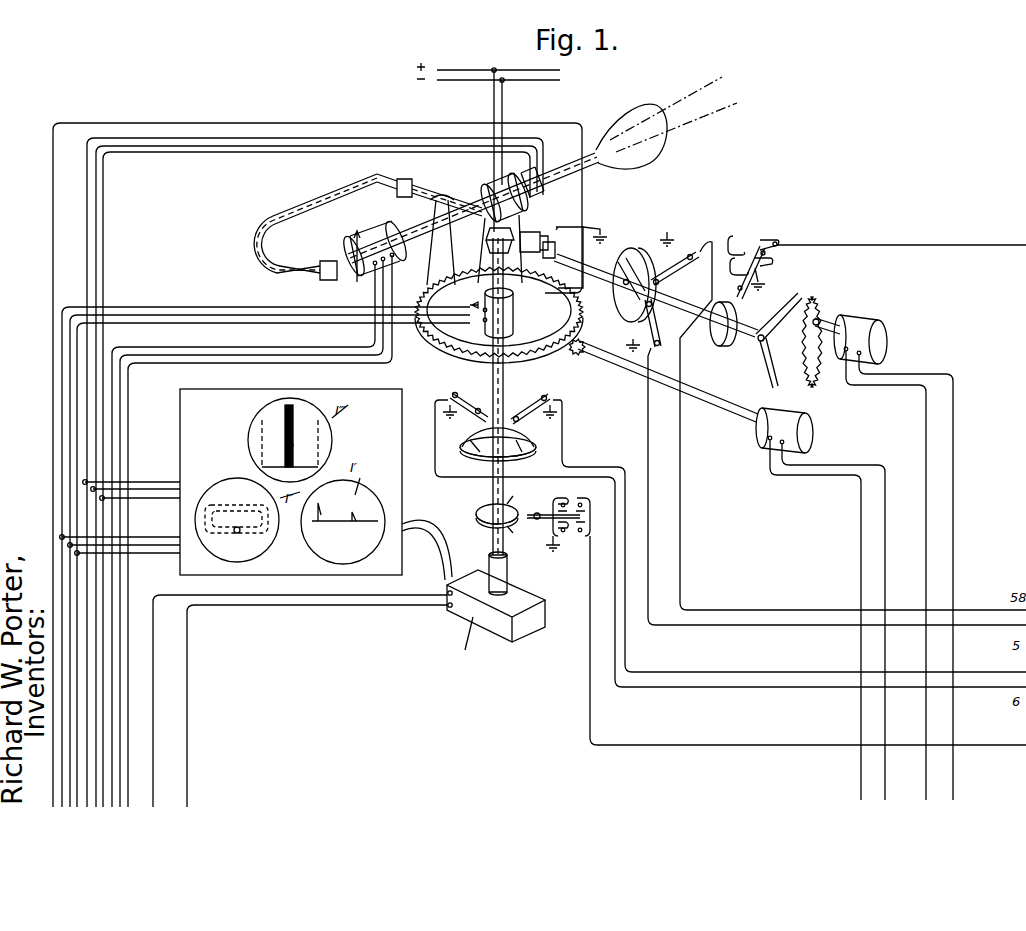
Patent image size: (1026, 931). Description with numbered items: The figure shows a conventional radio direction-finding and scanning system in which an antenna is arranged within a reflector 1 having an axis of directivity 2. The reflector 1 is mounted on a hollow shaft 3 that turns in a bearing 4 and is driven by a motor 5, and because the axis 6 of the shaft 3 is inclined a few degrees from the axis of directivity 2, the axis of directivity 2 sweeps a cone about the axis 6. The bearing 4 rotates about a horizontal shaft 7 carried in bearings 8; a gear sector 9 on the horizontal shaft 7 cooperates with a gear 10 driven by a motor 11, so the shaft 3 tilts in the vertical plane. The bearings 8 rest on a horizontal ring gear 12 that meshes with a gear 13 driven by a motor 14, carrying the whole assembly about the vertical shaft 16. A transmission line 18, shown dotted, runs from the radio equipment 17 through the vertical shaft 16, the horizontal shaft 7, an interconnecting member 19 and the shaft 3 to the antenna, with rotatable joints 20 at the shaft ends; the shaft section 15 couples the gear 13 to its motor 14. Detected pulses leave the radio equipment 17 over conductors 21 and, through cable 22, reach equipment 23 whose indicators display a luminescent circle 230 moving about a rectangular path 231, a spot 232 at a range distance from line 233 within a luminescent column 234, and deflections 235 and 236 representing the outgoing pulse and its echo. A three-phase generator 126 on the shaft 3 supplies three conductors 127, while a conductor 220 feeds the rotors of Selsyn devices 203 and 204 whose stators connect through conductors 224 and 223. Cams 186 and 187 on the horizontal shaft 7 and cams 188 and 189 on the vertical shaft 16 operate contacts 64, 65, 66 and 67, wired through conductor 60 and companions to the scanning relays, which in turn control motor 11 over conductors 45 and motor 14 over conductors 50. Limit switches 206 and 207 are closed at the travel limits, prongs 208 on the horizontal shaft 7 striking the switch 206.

The reflector 1 is at (662, 152).
The axis of directivity 2 is at (670, 118).
The shaft 3 is at (556, 168).
The bearing 4 is at (526, 177).
The motor 5 is at (495, 190).
The axis of the shaft 6 is at (693, 124).
The horizontal shaft 7 is at (597, 267).
The bearings 8 is at (441, 197).
The gear sector 9 is at (792, 308).
The gear 10 is at (822, 318).
The motor 11 is at (867, 326).
The horizontal ring gear 12 is at (516, 348).
The gear 13 is at (583, 340).
The motor 14 is at (784, 412).
The shaft 15 is at (668, 381).
The vertical shaft 16 is at (503, 388).
The radio equipment 17 is at (528, 596).
The transmission line 18 is at (493, 390).
The interconnecting member 19 is at (256, 264).
The rotatable joints 20 is at (404, 183).
The conductors 21 is at (153, 690).
The cable 22 is at (438, 537).
The equipment 23 is at (180, 440).
The conductors 45 is at (938, 790).
The conductors 50 is at (872, 790).
The conductor 60 is at (1025, 666).
The contacts 64 is at (688, 253).
The contacts 65 is at (650, 353).
The contacts 66 is at (557, 398).
The contacts 67 is at (448, 393).
The three-phase generator 126 is at (380, 236).
The conductors 127 is at (293, 363).
The cam 186 is at (637, 251).
The cam 187 is at (628, 320).
The cam 188 is at (532, 452).
The cam 189 is at (470, 455).
The Selsyn transformer device 203 is at (548, 232).
The Selsyn transformer device 204 is at (513, 302).
The limit switch 206 is at (762, 242).
The limit switch 207 is at (588, 512).
The prongs 208 is at (722, 304).
The conductor 220 is at (53, 380).
The conductors 223 is at (360, 278).
The conductors 224 is at (345, 153).
The luminescent circle 230 is at (237, 533).
The rectangular path 231 is at (222, 505).
The illuminated spot 232 is at (287, 444).
The line 233 is at (318, 455).
The luminescent column 234 is at (292, 415).
The deflection 235 is at (345, 503).
The deflection 236 is at (353, 516).